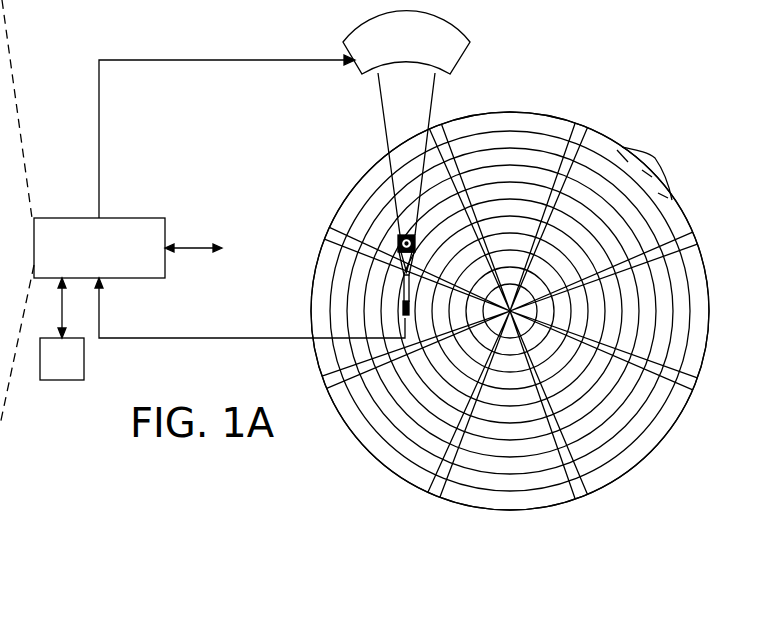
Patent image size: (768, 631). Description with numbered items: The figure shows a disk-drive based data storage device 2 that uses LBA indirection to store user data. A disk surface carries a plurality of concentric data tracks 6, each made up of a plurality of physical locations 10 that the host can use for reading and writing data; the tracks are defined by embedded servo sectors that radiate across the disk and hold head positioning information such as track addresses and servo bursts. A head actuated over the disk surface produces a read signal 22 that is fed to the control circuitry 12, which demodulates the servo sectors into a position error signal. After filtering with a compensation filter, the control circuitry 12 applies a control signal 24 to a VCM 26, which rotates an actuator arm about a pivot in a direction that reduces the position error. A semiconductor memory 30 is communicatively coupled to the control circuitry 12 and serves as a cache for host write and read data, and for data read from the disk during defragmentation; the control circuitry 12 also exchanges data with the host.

The data storage device 2 is at (712, 83).
The data tracks 6 is at (500, 140).
The physical locations 10 is at (655, 158).
The control circuitry 12 is at (138, 217).
The read signal 22 is at (196, 340).
The control signal 24 is at (99, 118).
The VCM 26 is at (360, 73).
The semiconductor memory 30 is at (63, 381).